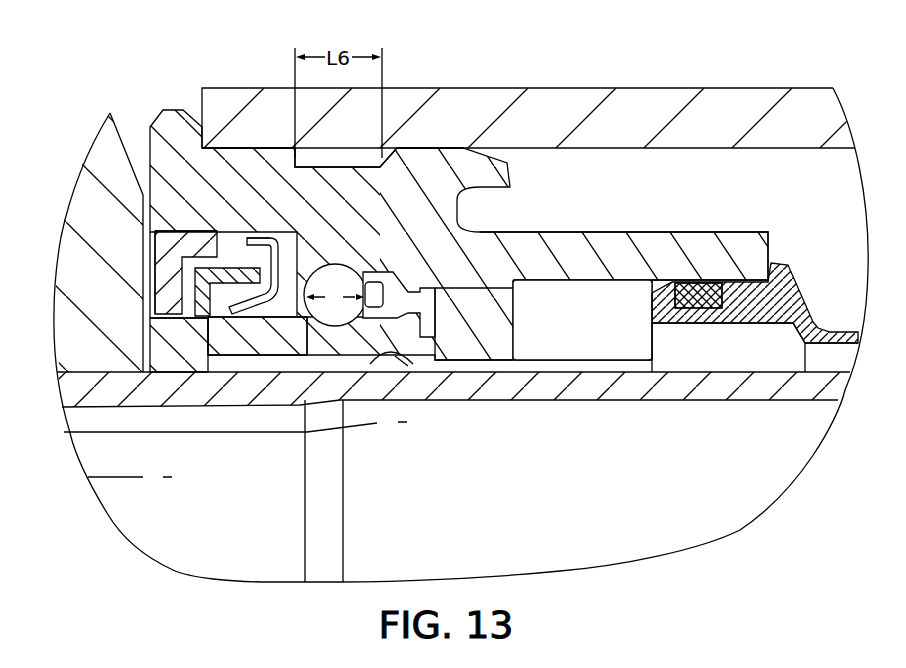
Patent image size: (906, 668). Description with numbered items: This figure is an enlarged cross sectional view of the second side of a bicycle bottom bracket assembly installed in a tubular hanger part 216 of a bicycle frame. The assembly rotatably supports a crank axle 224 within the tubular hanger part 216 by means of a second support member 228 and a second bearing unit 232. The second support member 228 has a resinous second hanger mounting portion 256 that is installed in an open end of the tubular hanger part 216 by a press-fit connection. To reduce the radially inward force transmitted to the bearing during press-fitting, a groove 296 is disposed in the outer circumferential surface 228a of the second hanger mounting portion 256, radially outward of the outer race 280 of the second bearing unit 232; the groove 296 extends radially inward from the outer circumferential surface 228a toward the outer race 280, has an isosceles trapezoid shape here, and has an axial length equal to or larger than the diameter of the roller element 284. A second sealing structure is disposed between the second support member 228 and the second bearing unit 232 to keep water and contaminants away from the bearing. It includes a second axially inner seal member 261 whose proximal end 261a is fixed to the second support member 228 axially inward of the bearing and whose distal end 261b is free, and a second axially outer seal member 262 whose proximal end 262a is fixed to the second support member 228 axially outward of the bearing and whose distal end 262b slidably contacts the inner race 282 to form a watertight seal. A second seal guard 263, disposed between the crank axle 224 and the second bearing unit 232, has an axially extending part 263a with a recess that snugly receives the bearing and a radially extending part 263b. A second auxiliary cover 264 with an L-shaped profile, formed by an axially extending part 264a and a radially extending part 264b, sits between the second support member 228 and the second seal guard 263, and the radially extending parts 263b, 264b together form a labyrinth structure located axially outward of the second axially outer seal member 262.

The tubular hanger part 216 is at (738, 85).
The crank axle 224 is at (55, 404).
The second support member 228 is at (155, 118).
The outer circumferential surface 228a is at (427, 148).
The second bearing unit 232 is at (357, 368).
The second hanger mounting portion 256 is at (261, 146).
The second axially inner seal member 261 is at (440, 310).
The proximal end 261a is at (423, 285).
The distal end 261b is at (407, 358).
The second axially outer seal member 262 is at (281, 315).
The proximal end 262a is at (253, 236).
The distal end 262b is at (221, 285).
The second seal guard 263 is at (188, 330).
The axially extending part 263a is at (323, 401).
The radially extending part 263b is at (152, 328).
The second auxiliary cover 264 is at (166, 316).
The axially extending part 264a is at (183, 229).
The radially extending part 264b is at (153, 250).
The outer race 280 is at (340, 250).
The inner race 282 is at (249, 322).
The roller element 284 is at (340, 276).
The groove 296 is at (350, 167).